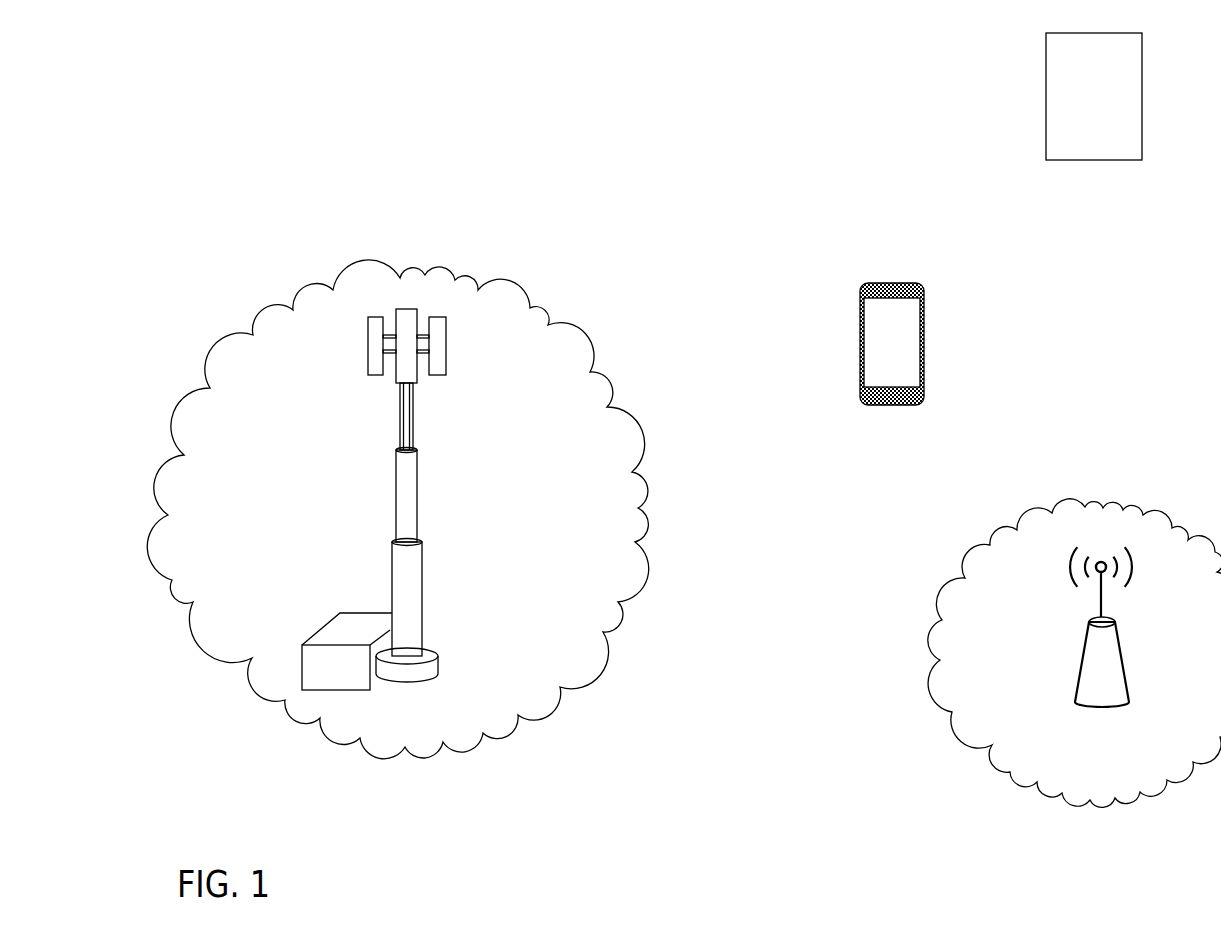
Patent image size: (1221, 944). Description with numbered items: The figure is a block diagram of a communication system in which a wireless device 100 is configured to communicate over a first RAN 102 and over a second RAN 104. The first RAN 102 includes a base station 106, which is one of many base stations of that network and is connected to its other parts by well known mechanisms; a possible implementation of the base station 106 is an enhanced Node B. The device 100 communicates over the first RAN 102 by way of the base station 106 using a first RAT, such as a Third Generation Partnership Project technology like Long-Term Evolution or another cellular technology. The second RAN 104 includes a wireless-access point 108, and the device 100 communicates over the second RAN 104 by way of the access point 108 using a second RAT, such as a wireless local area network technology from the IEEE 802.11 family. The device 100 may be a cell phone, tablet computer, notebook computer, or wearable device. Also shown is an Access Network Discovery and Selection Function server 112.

The wireless device 100 is at (927, 327).
The first RAN 102 is at (677, 435).
The second RAN 104 is at (902, 644).
The base station 106 is at (342, 467).
The wireless-access point 108 is at (1078, 653).
The ANDSF server 112 is at (1143, 82).